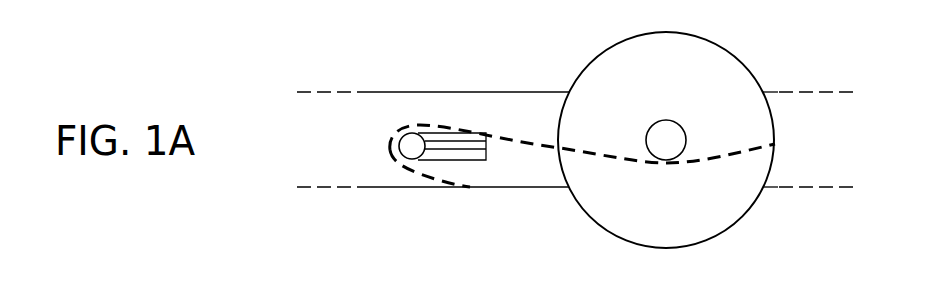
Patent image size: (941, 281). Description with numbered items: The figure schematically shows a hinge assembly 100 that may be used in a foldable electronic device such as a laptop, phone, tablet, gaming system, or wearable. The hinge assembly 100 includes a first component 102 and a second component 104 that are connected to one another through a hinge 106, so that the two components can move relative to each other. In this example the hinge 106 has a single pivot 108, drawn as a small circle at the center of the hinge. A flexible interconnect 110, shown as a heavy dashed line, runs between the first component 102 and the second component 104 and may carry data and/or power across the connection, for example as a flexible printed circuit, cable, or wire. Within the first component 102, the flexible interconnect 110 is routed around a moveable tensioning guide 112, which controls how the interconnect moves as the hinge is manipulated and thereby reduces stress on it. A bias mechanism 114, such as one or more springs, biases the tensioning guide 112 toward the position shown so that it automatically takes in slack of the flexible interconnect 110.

The hinge assembly 100 is at (813, 47).
The first component 102 is at (442, 92).
The second component 104 is at (800, 187).
The hinge 106 is at (602, 53).
The pivot 108 is at (665, 120).
The flexible interconnect 110 is at (612, 162).
The moveable tensioning guide 112 is at (397, 131).
The bias mechanism 114 is at (460, 152).